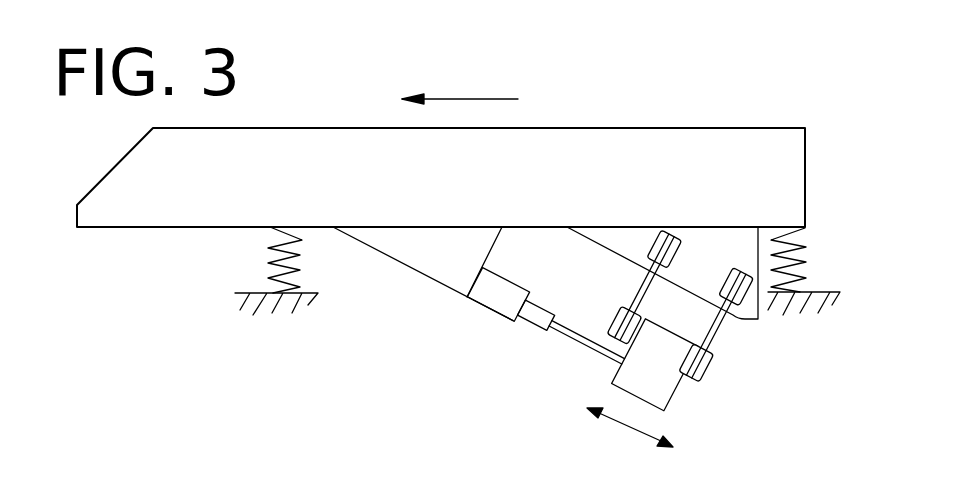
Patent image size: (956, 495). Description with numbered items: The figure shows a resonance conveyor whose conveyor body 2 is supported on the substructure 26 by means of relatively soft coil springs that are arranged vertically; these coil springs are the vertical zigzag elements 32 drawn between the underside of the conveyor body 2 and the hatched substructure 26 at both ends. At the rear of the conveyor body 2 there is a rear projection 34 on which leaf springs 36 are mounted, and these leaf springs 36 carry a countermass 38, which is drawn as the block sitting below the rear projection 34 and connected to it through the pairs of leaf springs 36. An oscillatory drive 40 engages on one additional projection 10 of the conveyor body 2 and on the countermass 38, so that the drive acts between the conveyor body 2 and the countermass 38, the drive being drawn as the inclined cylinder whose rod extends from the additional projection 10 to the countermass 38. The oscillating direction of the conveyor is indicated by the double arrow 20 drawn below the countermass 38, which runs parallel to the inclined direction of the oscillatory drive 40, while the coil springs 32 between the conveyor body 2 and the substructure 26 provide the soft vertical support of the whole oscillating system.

The conveyor body 2 is at (620, 145).
The rear projection 34 is at (706, 245).
The additional projection 10 is at (437, 263).
The oscillatory drive 40 is at (520, 330).
The countermass 38 is at (670, 382).
The leaf springs 36 is at (637, 292).
The springs 32 is at (272, 256).
The substructure 26 is at (271, 304).
The double arrow 20 is at (628, 430).